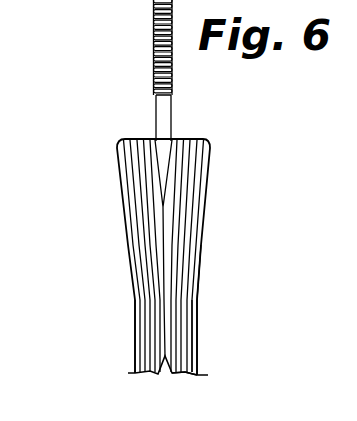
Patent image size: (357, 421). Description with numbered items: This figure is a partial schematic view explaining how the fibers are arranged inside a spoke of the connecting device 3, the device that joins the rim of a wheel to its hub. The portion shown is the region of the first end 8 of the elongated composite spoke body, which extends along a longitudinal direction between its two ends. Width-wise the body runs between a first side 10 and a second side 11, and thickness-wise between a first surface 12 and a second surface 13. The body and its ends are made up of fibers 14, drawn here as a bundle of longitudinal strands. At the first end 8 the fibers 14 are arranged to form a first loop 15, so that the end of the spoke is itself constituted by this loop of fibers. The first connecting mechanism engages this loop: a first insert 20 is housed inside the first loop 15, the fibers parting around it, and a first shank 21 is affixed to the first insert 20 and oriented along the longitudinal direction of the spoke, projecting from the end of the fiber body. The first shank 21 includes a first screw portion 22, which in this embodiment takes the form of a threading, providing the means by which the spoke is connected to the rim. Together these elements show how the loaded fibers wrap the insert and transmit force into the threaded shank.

The connecting device 3 is at (206, 278).
The first end 8 is at (158, 246).
The first side 10 is at (135, 362).
The second side 11 is at (197, 357).
The first surface 12 is at (158, 315).
The second surface 13 is at (215, 298).
The fibers 14 is at (148, 243).
The first loop 15 is at (117, 178).
The first insert 20 is at (207, 161).
The first shank 21 is at (156, 117).
The first screw portion 22 is at (155, 47).